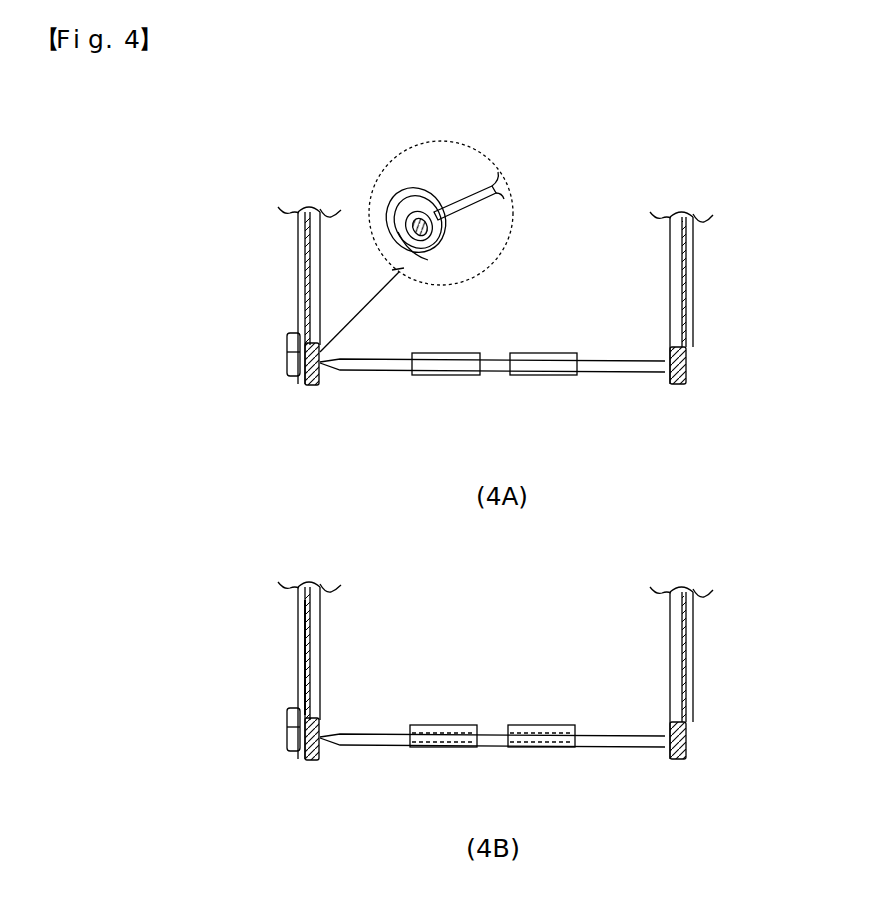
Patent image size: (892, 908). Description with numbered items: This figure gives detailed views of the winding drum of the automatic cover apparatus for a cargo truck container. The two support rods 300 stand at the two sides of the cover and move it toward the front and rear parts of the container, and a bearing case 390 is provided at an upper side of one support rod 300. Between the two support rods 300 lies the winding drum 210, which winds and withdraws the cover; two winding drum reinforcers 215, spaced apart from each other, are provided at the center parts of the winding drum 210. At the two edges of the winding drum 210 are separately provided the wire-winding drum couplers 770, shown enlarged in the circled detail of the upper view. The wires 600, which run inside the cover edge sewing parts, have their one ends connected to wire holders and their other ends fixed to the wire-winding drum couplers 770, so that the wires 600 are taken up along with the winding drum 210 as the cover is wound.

In FIG. 4A, the support rod 300 is at (298, 268).
In FIG. 4B, the support rod 300 is at (495, 670).
In FIG. 4A, the bearing case 390 is at (688, 380).
In FIG. 4B, the bearing case 390 is at (688, 752).
In FIG. 4A, the wire-winding drum coupler 770 is at (316, 386).
In FIG. 4B, the wire-winding drum coupler 770 is at (316, 761).
In FIG. 4A, the wire 600 is at (462, 201).
In FIG. 4B, the wire 600 is at (318, 680).
In FIG. 4B, the winding drum 210 is at (392, 737).
In FIG. 4B, the winding drum reinforcer 215 is at (540, 748).